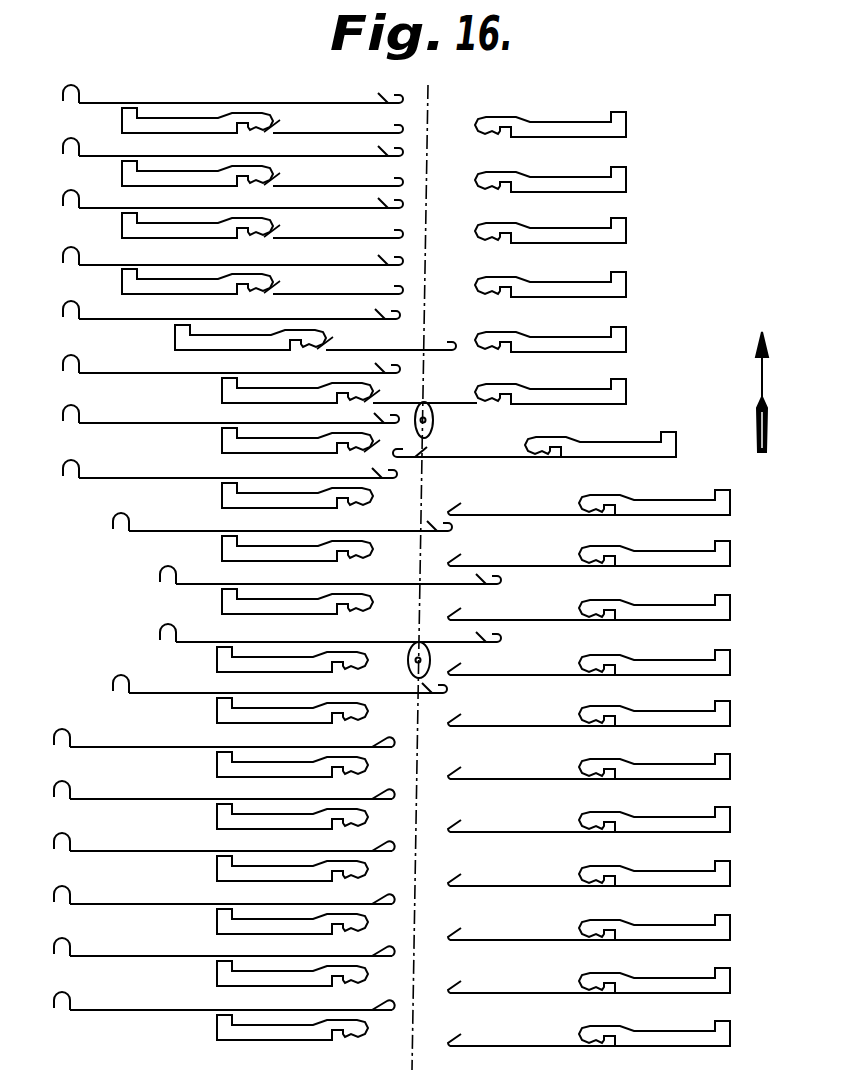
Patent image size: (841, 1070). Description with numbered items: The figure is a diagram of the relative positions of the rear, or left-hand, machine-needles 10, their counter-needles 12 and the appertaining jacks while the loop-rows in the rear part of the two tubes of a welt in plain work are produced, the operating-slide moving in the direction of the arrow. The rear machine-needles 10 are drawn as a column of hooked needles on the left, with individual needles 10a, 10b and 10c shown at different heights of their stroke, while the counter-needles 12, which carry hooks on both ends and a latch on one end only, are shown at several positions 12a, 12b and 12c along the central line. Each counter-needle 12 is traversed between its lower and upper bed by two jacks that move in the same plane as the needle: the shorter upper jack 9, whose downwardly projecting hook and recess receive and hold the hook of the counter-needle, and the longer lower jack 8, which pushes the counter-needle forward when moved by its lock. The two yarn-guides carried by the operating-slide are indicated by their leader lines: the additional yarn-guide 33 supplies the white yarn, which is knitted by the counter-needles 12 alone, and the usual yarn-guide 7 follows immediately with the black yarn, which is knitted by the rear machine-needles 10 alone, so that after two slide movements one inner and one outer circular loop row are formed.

The rear machine-needle 10 is at (67, 98).
The hooked wire 10a is at (330, 576).
The hooked wire 10b is at (280, 683).
The hooked wire 10c is at (224, 741).
The upper jack 9 is at (122, 128).
The counter-needle 12 is at (501, 585).
The connecting wire 12a is at (391, 343).
The connecting wire 12b is at (534, 451).
The connecting wire 12c is at (589, 504).
The lower jack 8 is at (627, 128).
The additional yarn-guide 33 is at (430, 422).
The yarn-guide 7 is at (425, 668).